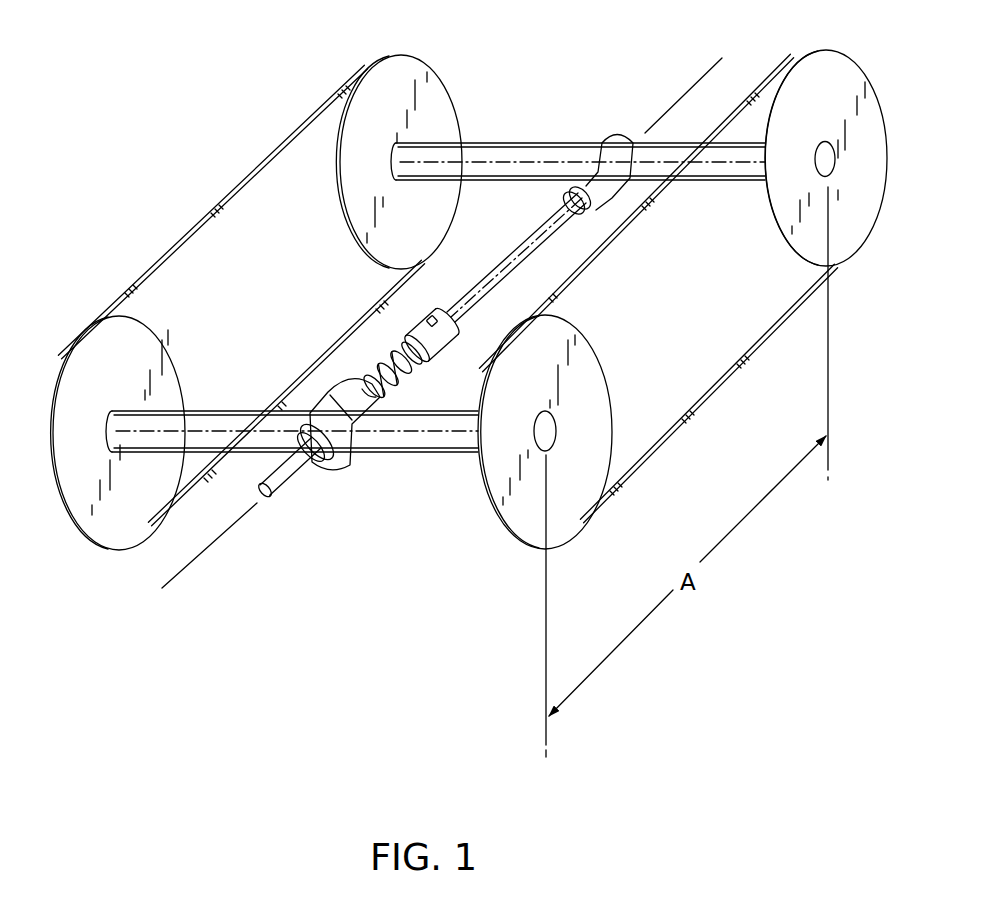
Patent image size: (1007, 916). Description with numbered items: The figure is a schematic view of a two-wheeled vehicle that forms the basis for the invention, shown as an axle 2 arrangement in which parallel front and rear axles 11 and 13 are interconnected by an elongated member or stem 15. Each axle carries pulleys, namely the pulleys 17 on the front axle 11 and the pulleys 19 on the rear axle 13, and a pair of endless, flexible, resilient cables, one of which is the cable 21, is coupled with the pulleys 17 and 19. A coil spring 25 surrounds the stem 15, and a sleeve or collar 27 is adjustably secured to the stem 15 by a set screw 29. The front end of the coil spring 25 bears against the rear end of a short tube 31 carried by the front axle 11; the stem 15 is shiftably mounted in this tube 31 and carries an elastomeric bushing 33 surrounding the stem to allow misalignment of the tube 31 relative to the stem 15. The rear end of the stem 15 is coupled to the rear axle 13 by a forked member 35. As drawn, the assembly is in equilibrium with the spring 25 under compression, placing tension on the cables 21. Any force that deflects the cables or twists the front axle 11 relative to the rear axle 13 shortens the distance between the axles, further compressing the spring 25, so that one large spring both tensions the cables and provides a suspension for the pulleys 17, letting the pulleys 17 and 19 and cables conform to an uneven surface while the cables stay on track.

The axle assembly 2 is at (404, 433).
The front axle 11 is at (442, 433).
The rear axle 13 is at (486, 158).
The stem 15 is at (500, 266).
The pulleys 17 is at (590, 376).
The pulleys 19 is at (417, 56).
The cable 21 is at (138, 272).
The coil spring 25 is at (398, 340).
The sleeve or collar 27 is at (448, 358).
The set screw 29 is at (429, 313).
The short tube 31 is at (331, 401).
The elastomeric bushing 33 is at (313, 470).
The forked member 35 is at (598, 134).